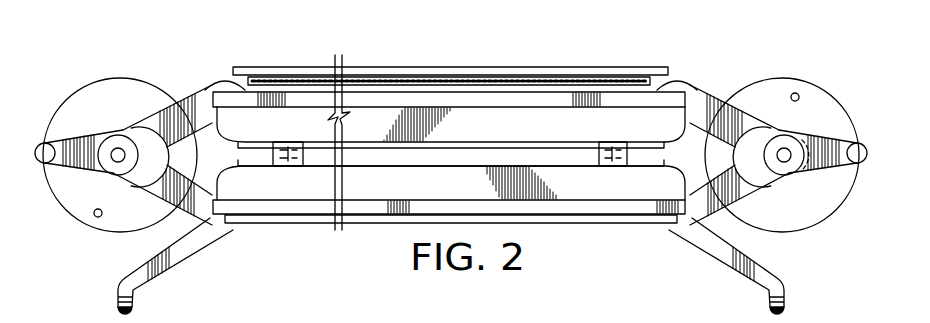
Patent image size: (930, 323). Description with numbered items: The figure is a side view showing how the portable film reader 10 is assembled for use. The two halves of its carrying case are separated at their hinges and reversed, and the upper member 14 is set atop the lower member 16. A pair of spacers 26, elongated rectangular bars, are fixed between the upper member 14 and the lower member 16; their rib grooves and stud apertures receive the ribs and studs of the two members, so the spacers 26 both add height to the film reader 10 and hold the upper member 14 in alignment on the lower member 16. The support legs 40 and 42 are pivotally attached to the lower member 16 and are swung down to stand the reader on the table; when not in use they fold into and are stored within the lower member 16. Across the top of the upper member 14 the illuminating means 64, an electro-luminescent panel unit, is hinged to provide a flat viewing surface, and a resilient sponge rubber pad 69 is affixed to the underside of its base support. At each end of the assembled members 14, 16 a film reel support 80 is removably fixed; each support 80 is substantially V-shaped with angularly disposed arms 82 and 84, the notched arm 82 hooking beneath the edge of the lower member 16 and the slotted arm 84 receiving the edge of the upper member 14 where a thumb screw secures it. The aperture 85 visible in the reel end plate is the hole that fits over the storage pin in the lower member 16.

The film reader 10 is at (467, 138).
The upper member 14 is at (663, 118).
The lower member 16 is at (657, 190).
The spacers 26 is at (298, 167).
The support leg 40 is at (180, 254).
The support leg 42 is at (755, 274).
The illuminating means 64 is at (557, 62).
The pad 69 is at (305, 85).
The film reel supports 80 is at (206, 86).
The arm 82 is at (197, 100).
The arm 84 is at (197, 205).
The aperture 85 is at (798, 96).